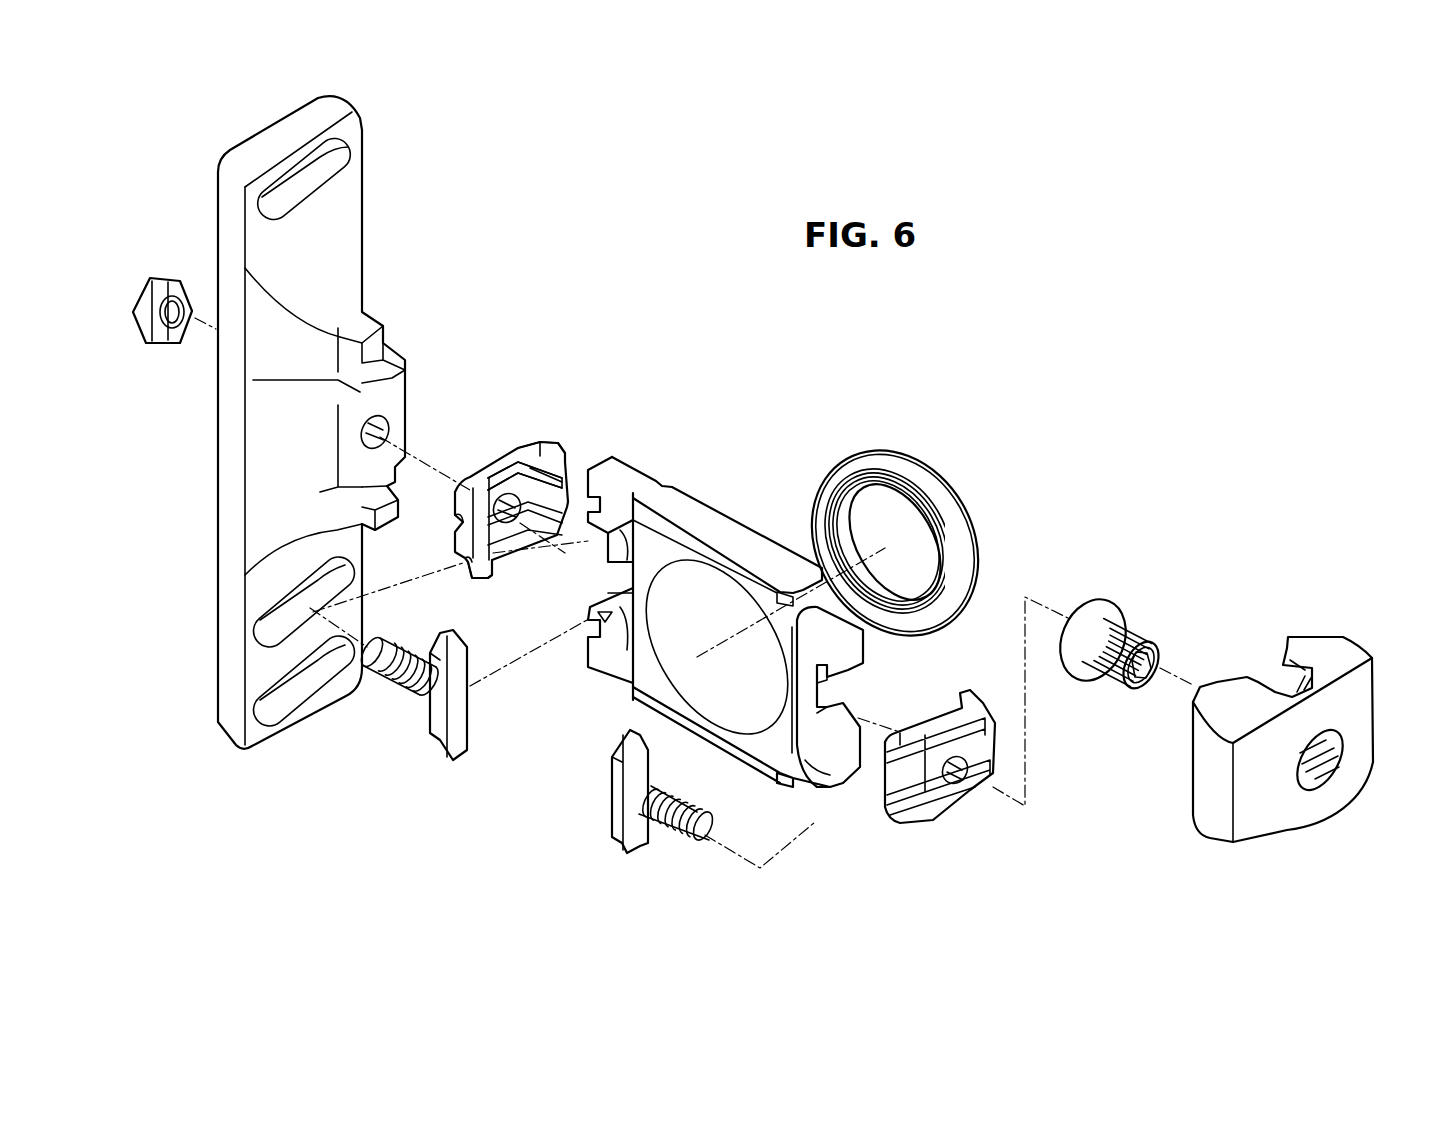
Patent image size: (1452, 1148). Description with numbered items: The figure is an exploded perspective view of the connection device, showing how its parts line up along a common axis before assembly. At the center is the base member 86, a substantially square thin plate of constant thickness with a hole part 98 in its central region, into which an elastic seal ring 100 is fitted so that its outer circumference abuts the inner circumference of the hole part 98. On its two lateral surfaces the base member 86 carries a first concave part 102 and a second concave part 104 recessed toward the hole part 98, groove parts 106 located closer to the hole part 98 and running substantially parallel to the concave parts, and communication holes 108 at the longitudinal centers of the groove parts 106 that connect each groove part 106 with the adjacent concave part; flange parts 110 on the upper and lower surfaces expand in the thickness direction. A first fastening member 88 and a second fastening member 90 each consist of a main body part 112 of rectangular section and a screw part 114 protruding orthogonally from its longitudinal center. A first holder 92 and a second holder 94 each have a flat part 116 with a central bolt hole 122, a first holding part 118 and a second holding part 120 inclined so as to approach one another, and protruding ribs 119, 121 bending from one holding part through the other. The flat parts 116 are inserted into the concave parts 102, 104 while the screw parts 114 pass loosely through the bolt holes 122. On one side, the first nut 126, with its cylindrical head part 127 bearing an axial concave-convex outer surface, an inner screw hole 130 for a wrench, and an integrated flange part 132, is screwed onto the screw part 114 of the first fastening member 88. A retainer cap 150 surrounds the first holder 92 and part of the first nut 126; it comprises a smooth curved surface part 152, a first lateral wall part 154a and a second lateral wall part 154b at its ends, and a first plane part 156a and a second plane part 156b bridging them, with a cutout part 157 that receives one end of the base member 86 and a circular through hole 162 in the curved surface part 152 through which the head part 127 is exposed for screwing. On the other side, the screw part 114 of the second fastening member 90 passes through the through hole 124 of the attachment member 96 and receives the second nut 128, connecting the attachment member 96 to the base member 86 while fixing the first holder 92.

The base member 86 is at (744, 508).
The first fastening member 88 is at (613, 857).
The second fastening member 90 is at (556, 741).
The first holder 92 is at (878, 838).
The second holder 94 is at (548, 430).
The attachment member 96 is at (224, 518).
The hole part 98 is at (672, 633).
The seal ring 100 is at (950, 509).
The first concave part 102 is at (845, 784).
The second concave part 104 is at (595, 606).
The groove part 106 is at (633, 540).
The communication hole 108 is at (612, 566).
The flange part 110 is at (773, 555).
The main body part 112 is at (457, 718).
The screw part 114 is at (393, 678).
The flat part 116 is at (505, 460).
The first holding part 118 is at (481, 578).
The rib 119 is at (990, 737).
The second holding part 120 is at (549, 488).
The rib 121 is at (993, 775).
The bolt hole 122 is at (507, 513).
The through hole 124 is at (390, 432).
The first nut 126 is at (1135, 639).
The head part 127 is at (1099, 660).
The second nut 128 is at (162, 278).
The screw hole 130 is at (1160, 660).
The flange part 132 is at (1082, 604).
The retainer cap 150 is at (1278, 735).
The curved surface part 152 is at (1290, 812).
The first lateral wall part 154a is at (1374, 705).
The second lateral wall part 154b is at (1212, 767).
The first plane part 156a is at (1333, 650).
The second plane part 156b is at (1222, 838).
The cutout part 157 is at (1282, 675).
The through hole 162 is at (1330, 760).